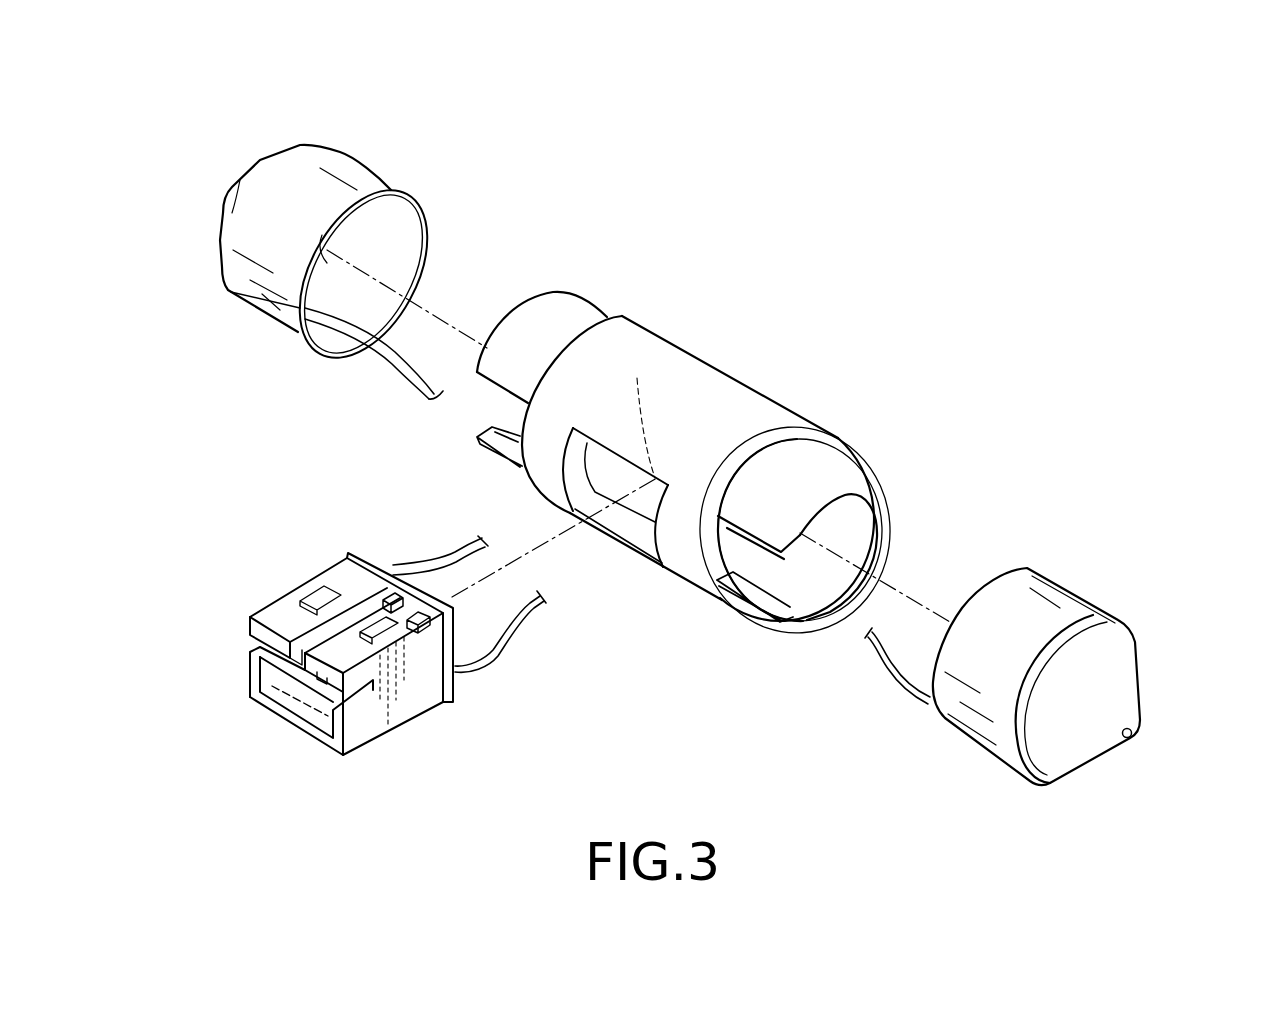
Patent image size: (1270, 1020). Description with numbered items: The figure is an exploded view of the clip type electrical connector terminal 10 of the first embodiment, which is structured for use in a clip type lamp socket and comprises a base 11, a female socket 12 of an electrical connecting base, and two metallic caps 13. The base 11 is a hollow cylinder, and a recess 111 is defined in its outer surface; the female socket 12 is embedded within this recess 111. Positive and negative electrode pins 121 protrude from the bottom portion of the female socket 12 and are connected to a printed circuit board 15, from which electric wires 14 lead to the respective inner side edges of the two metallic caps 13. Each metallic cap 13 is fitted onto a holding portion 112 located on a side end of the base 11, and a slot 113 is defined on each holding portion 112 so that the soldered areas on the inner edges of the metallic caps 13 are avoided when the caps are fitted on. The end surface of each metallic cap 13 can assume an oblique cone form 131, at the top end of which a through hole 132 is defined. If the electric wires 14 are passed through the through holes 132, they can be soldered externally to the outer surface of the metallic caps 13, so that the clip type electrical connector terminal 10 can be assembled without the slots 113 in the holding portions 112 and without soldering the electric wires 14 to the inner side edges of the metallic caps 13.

The clip type electrical connector terminal 10 is at (915, 336).
The base 11 is at (698, 380).
The recess 111 is at (638, 527).
The holding portion 112 is at (556, 307).
The slot 113 is at (512, 418).
The female socket 12 is at (273, 617).
The positive and negative electrode pins 121 is at (400, 575).
The metallic cap 13 is at (250, 233).
The oblique cone form 131 is at (233, 190).
The through hole 132 is at (1138, 737).
The electric wires 14 is at (413, 363).
The printed circuit board 15 is at (357, 553).